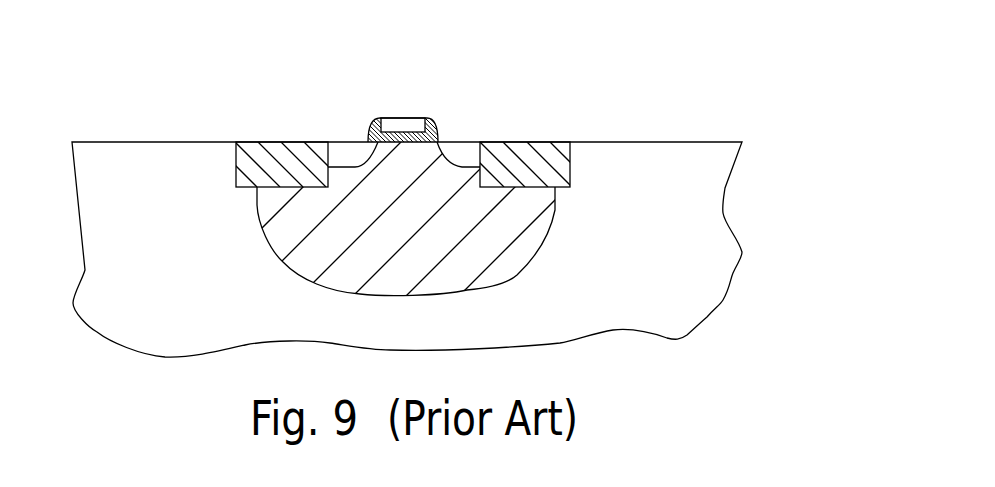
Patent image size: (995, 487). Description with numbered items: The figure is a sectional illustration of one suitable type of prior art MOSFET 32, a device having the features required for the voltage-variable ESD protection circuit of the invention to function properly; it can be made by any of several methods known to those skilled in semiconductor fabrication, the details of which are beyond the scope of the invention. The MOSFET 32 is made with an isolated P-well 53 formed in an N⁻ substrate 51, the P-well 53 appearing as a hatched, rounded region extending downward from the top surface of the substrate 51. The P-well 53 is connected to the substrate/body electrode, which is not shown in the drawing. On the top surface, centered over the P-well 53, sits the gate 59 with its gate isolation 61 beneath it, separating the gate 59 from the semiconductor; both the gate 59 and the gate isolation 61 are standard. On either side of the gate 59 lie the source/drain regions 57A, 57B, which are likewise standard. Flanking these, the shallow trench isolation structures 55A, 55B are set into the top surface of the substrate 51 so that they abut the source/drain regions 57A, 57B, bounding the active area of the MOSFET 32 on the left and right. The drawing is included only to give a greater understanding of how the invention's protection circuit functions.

The MOSFET 32 is at (208, 83).
The N⁻ substrate 51 is at (148, 301).
The P-well 53 is at (527, 245).
The shallow trench isolation structure 55A is at (245, 172).
The shallow trench isolation structure 55B is at (560, 170).
The source/drain region 57A is at (342, 150).
The source/drain region 57B is at (455, 150).
The gate 59 is at (403, 118).
The gate isolation 61 is at (373, 124).